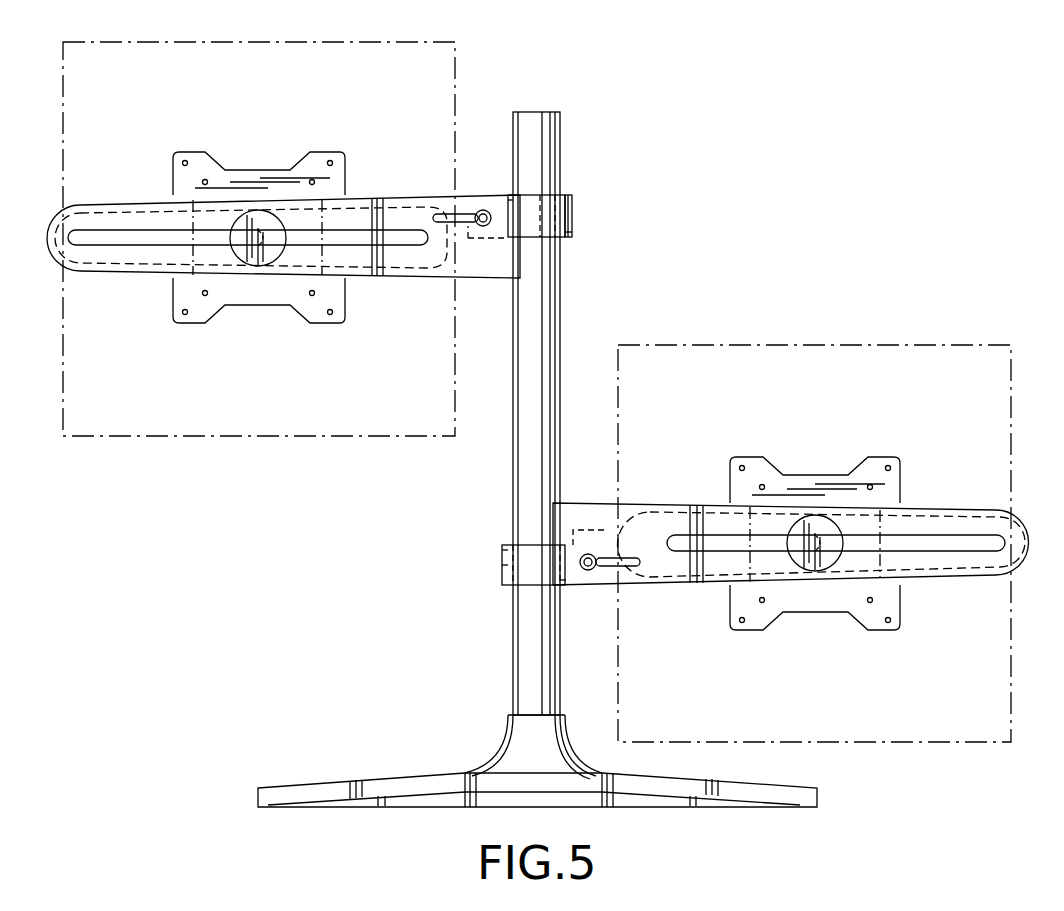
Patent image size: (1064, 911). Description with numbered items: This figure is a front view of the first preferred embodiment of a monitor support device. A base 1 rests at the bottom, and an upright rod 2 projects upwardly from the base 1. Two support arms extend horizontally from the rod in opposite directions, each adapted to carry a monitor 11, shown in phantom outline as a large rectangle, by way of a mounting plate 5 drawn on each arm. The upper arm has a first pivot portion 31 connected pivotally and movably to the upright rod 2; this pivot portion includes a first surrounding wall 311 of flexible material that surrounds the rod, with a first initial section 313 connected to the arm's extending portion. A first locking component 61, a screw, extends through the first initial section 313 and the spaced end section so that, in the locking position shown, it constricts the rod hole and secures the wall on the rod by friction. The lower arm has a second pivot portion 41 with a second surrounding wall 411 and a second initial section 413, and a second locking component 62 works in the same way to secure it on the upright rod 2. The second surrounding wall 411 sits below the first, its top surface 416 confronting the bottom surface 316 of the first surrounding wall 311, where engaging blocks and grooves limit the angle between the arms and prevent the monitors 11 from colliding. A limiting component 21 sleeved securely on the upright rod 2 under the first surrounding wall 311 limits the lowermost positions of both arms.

The base 1 is at (375, 787).
The upright rod 2 is at (532, 672).
The limiting component 21 is at (547, 592).
The support arm 5 is at (264, 290).
The monitor 11 is at (129, 416).
The first pivot portion 31 is at (510, 203).
The first surrounding wall 311 is at (574, 217).
The first initial section 313 is at (492, 204).
The bottom surface 316 is at (571, 238).
The second pivot portion 41 is at (572, 544).
The second surrounding wall 411 is at (502, 565).
The second initial section 413 is at (574, 567).
The top surface 416 is at (503, 545).
The first locking component 61 is at (480, 230).
The second locking component 62 is at (588, 573).